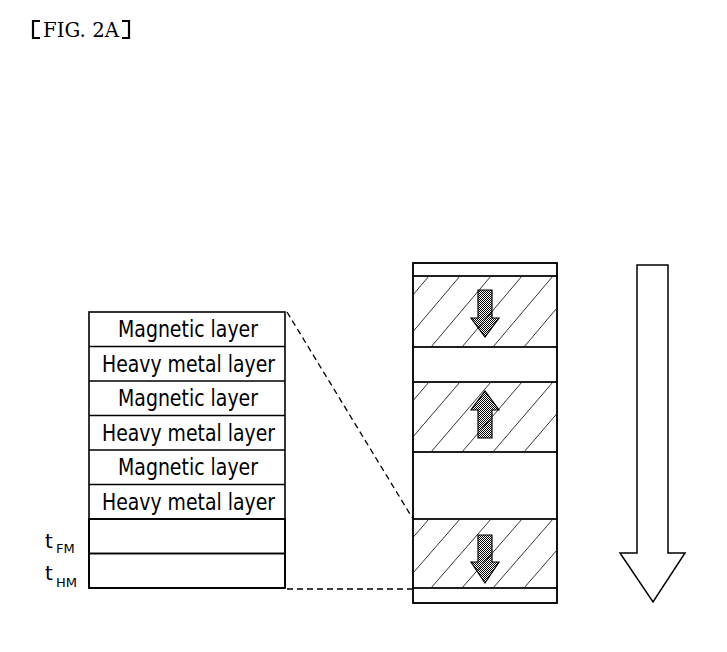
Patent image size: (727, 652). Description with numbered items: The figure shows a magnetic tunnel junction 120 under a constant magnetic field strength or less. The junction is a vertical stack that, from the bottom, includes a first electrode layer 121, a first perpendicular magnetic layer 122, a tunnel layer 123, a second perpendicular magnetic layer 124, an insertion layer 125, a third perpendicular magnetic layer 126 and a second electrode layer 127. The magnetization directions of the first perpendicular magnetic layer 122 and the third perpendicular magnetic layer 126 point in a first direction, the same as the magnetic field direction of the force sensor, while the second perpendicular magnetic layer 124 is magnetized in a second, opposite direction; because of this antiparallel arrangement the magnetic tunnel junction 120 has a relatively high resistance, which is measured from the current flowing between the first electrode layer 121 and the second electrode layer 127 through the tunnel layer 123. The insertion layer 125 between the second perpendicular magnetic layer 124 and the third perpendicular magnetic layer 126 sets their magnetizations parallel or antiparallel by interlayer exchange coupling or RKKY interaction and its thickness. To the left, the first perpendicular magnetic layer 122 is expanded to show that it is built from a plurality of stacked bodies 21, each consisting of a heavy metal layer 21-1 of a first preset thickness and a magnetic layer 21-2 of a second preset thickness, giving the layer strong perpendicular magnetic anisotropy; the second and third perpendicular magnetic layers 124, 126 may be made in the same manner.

The magnetic tunnel junction 120 is at (395, 158).
The first electrode layer 121 is at (559, 600).
The first perpendicular magnetic layer 122 is at (559, 540).
The tunnel layer 123 is at (559, 492).
The second perpendicular magnetic layer 124 is at (559, 415).
The insertion layer 125 is at (559, 365).
The third perpendicular magnetic layer 126 is at (559, 315).
The second electrode layer 127 is at (559, 270).
The stacked body 21 is at (369, 525).
The heavy metal layer 21-1 is at (288, 570).
The magnetic layer 21-2 is at (288, 535).